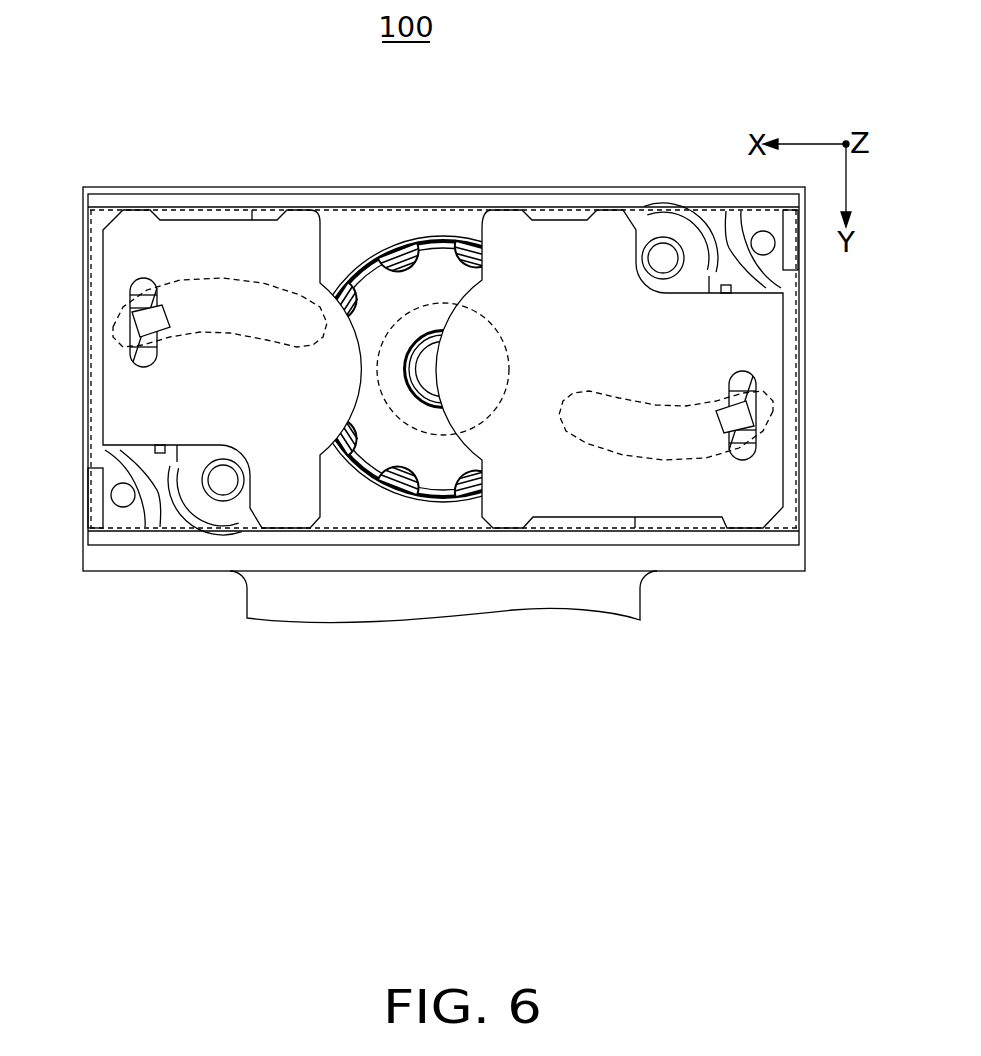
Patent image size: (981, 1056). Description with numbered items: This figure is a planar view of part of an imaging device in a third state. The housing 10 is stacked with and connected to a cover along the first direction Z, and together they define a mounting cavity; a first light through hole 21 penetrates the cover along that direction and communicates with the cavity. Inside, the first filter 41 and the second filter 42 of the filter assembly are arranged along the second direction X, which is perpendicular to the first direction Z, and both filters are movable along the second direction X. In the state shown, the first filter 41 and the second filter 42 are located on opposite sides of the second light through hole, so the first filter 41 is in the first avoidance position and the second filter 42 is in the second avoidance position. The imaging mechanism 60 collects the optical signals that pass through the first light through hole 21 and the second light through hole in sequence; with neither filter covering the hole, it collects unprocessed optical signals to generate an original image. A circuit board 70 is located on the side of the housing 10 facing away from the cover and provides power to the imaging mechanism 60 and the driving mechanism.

The housing 10 is at (313, 198).
The first light through hole 21 is at (437, 440).
The first filter 41 is at (582, 248).
The second filter 42 is at (215, 240).
The imaging mechanism 60 is at (453, 357).
The circuit board 70 is at (735, 560).